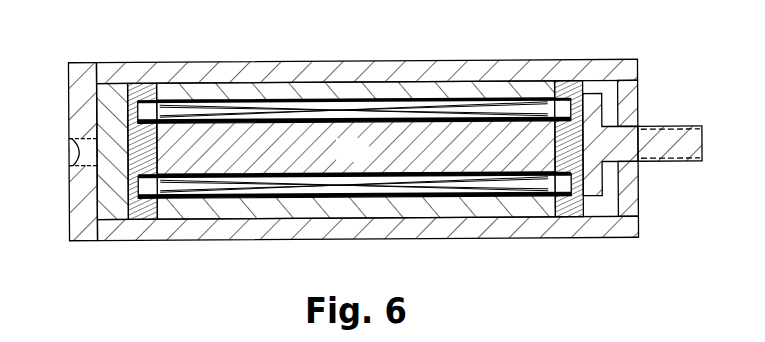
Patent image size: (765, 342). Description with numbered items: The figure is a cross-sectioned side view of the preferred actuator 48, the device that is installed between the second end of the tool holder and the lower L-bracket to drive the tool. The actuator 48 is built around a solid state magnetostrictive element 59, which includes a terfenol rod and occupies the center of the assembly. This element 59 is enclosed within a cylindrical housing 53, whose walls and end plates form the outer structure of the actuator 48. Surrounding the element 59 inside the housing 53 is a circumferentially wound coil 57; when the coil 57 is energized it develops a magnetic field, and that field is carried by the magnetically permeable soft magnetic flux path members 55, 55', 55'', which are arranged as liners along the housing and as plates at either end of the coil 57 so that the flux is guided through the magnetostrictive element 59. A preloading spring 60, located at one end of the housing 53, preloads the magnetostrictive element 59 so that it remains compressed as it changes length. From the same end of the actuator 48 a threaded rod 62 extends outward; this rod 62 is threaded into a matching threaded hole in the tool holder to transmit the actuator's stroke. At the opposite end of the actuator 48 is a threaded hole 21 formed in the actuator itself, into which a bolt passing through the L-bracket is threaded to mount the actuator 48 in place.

The actuator 48 is at (64, 94).
The threaded hole 21 is at (68, 144).
The cylindrical housing 53 is at (640, 237).
The magnetic flux path member 55 is at (356, 199).
The magnetic flux path member 55' is at (136, 189).
The magnetic flux path member 55'' is at (621, 120).
The circumferentially wound coil 57 is at (450, 192).
The magnetostrictive element 59 is at (366, 160).
The preloading spring 60 is at (598, 119).
The threaded rod 62 is at (670, 164).